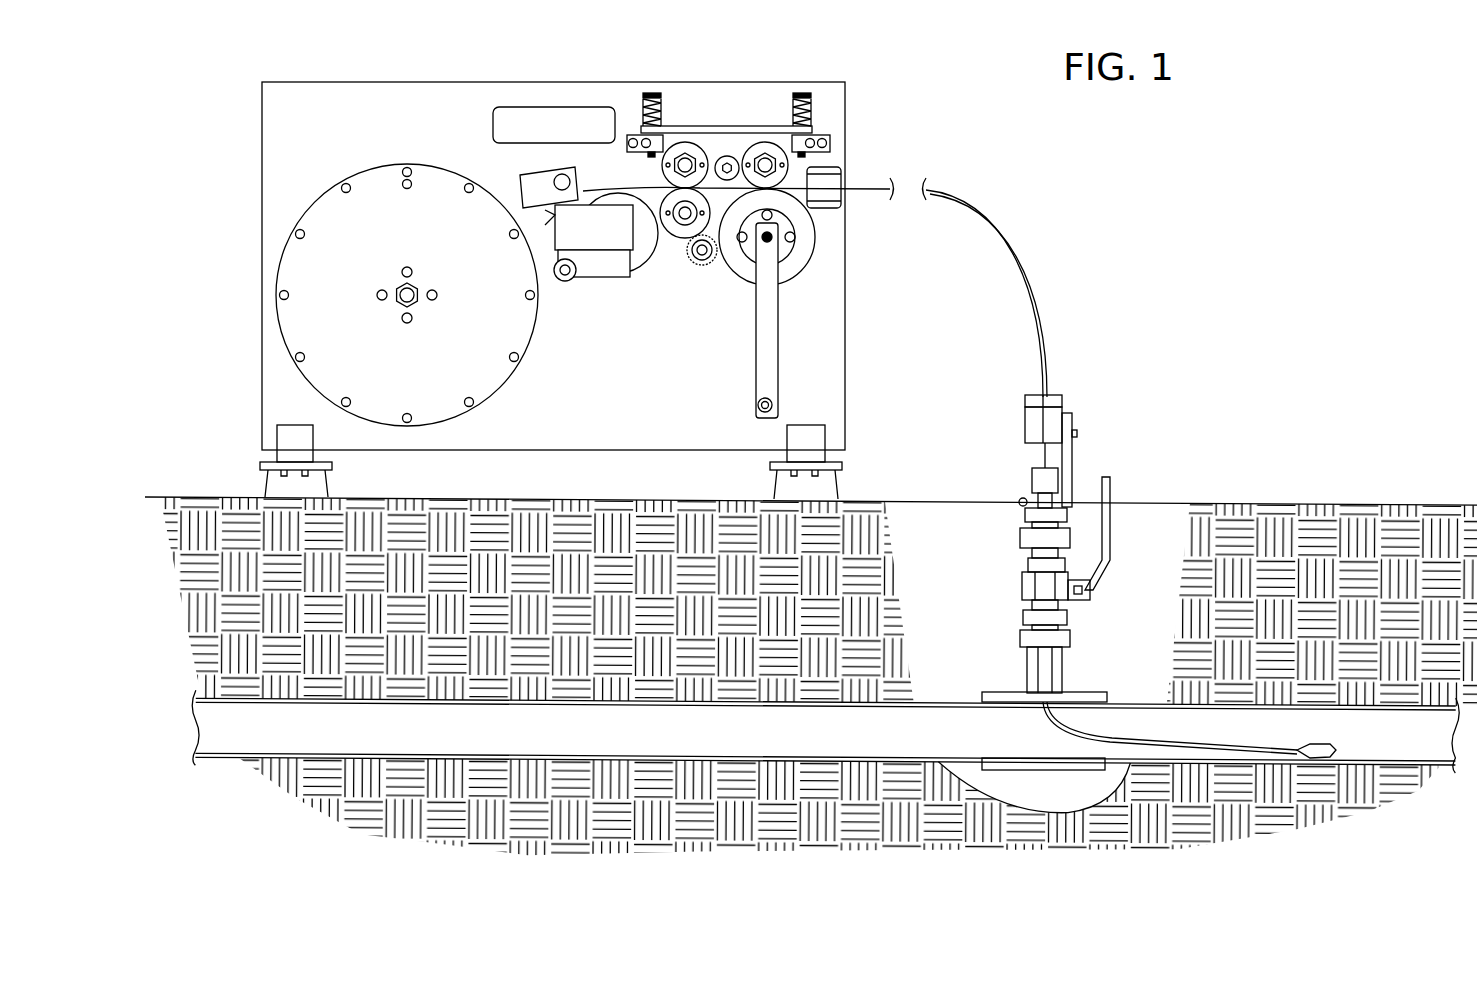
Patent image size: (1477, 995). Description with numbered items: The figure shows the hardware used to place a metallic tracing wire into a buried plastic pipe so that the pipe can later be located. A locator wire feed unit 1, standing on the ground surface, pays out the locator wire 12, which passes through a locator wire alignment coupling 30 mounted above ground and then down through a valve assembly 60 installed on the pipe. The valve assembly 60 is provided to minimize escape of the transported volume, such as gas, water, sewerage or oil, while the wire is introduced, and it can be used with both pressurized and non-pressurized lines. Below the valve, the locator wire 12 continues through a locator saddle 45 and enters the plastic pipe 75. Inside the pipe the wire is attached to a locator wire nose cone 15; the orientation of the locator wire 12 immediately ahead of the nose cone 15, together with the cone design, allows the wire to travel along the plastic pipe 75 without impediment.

The locator wire feed unit 1 is at (245, 152).
The locator wire 12 is at (977, 265).
The locator wire alignment coupling 30 is at (1018, 452).
The valve assembly 60 is at (1014, 580).
The locator saddle 45 is at (1085, 665).
The locator wire nose cone 15 is at (1334, 747).
The plastic pipe 75 is at (944, 738).